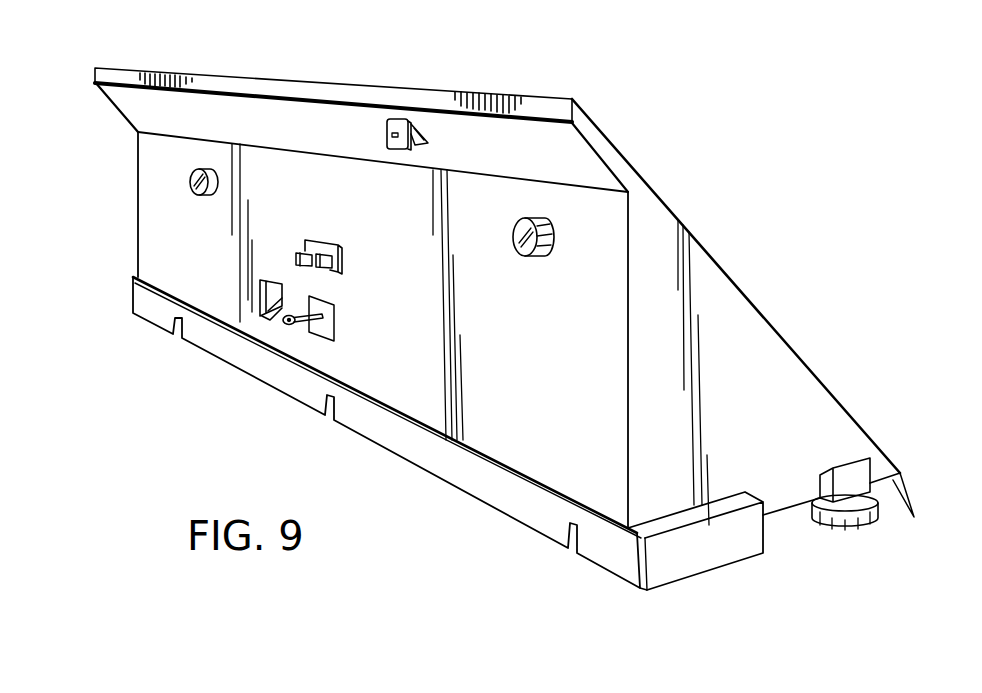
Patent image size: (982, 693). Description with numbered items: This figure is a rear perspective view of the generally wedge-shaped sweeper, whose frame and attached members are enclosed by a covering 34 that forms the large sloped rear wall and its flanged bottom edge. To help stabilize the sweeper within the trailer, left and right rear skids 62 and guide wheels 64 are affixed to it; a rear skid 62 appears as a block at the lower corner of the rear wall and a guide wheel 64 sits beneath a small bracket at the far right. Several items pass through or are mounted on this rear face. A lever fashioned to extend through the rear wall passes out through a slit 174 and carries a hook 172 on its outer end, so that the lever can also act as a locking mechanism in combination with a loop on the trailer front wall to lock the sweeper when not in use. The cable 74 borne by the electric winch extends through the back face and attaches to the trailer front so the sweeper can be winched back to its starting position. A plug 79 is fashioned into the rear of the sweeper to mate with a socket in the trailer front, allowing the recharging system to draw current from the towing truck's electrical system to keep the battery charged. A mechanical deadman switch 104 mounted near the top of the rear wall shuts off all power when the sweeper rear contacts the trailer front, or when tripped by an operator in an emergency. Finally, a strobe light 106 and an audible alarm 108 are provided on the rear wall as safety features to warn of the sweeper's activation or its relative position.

The covering 34 is at (742, 337).
The rear skid 62 is at (682, 558).
The guide wheel 64 is at (830, 525).
The cable 74 is at (288, 327).
The plug 79 is at (323, 238).
The mechanical deadman switch 104 is at (395, 119).
The strobe light 106 is at (190, 183).
The audible alarm 108 is at (533, 217).
The hook 172 is at (263, 318).
The slit 174 is at (278, 282).